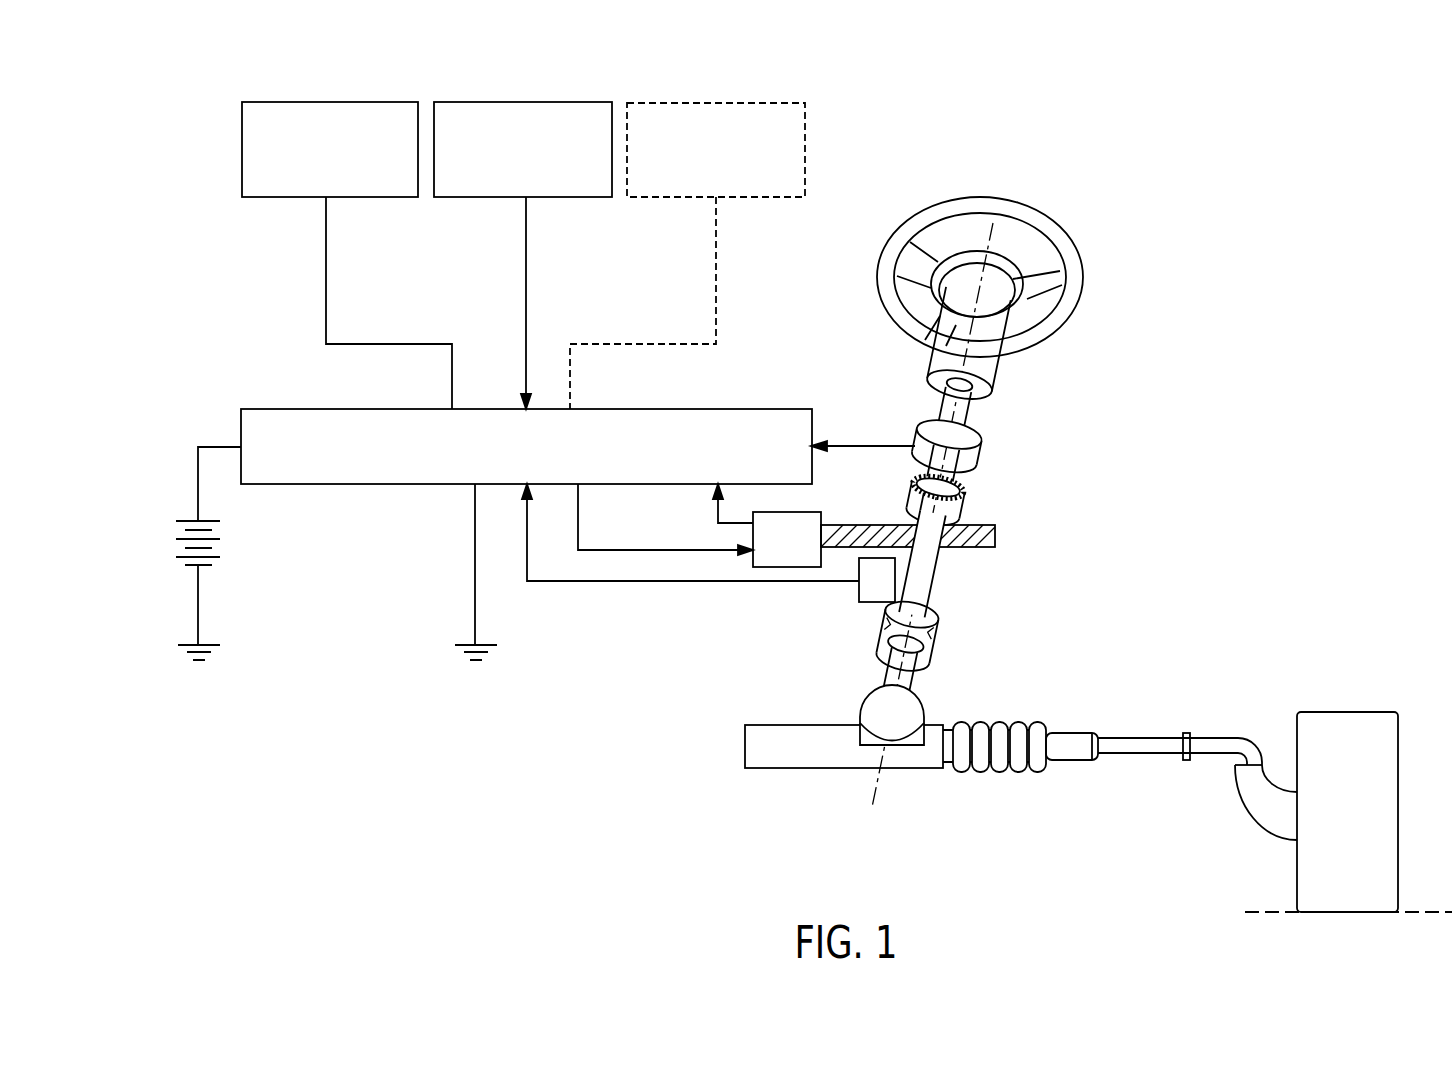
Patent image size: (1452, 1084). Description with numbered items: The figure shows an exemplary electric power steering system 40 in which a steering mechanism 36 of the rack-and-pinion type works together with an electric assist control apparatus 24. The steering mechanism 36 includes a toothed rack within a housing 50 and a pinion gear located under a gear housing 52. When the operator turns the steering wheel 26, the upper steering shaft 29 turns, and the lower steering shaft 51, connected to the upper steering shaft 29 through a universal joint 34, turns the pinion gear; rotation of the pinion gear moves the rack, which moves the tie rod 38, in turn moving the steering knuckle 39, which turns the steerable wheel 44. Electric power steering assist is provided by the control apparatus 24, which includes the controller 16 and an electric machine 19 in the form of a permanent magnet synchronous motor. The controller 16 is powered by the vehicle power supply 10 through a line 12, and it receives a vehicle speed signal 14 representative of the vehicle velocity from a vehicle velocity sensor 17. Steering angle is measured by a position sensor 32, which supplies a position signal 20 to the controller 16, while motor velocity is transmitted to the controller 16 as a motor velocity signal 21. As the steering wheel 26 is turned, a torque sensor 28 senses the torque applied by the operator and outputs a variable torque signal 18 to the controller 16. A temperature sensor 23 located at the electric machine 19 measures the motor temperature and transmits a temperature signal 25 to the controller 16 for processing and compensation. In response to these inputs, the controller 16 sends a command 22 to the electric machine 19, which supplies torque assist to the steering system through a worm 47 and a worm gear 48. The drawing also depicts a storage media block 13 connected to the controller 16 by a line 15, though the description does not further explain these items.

The vehicle power supply 10 is at (176, 540).
The line 12 is at (215, 447).
The storage media 13 is at (285, 198).
The vehicle speed signal 14 is at (525, 366).
The storage media connection line 15 is at (325, 275).
The controller 16 is at (511, 486).
The vehicle velocity sensor 17 is at (521, 101).
The variable torque signal 18 is at (870, 446).
The electric machine 19 is at (816, 512).
The position signal 20 is at (740, 582).
The motor velocity signal 21 is at (718, 510).
The command 22 is at (697, 552).
The temperature sensor 23 is at (806, 146).
The control apparatus 24 is at (1172, 426).
The temperature signal 25 is at (716, 250).
The steering wheel 26 is at (1037, 226).
The torque sensor 28 is at (970, 440).
The upper steering shaft 29 is at (966, 393).
The position sensor 32 is at (858, 590).
The universal joint 34 is at (932, 634).
The steering mechanism 36 is at (1030, 710).
The tie rod 38 is at (1137, 748).
The steering knuckle 39 is at (1264, 800).
The electric power steering system 40 is at (1254, 526).
The steerable wheel 44 is at (1333, 815).
The worm 47 is at (985, 536).
The worm gear 48 is at (953, 496).
The housing 50 is at (783, 755).
The lower steering shaft 51 is at (908, 680).
The gear housing 52 is at (870, 712).